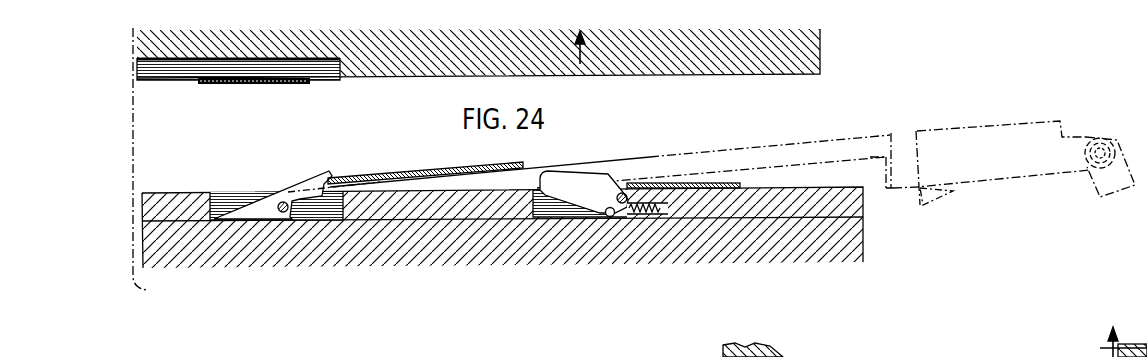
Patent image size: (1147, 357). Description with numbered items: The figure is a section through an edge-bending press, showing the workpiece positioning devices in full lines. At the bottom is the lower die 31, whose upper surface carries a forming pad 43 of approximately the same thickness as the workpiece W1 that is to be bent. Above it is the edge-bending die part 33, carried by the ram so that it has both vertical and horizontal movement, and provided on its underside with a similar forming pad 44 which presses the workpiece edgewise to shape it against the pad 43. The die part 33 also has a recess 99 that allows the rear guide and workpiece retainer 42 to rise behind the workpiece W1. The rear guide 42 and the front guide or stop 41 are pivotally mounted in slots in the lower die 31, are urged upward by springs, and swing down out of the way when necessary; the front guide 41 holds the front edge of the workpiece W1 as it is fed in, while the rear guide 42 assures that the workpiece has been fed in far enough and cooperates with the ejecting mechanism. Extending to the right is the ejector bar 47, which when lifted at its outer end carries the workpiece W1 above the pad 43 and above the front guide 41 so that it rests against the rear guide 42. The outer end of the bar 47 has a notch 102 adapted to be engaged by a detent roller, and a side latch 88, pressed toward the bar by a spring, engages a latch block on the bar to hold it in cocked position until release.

The lower die 31 is at (857, 250).
The edge-bending die part 33 is at (808, 52).
The front guide 41 is at (563, 180).
The rear guide 42 is at (307, 178).
The forming pad 43 is at (735, 187).
The forming pad 44 is at (308, 84).
The ejector bar 47 is at (862, 135).
The side latch 88 is at (933, 203).
The recess 99 is at (167, 63).
The notch 102 is at (1075, 135).
The workpiece W1 is at (370, 178).